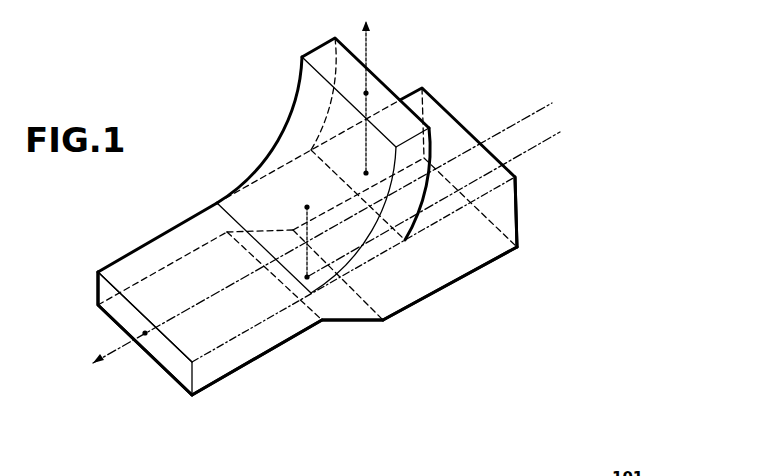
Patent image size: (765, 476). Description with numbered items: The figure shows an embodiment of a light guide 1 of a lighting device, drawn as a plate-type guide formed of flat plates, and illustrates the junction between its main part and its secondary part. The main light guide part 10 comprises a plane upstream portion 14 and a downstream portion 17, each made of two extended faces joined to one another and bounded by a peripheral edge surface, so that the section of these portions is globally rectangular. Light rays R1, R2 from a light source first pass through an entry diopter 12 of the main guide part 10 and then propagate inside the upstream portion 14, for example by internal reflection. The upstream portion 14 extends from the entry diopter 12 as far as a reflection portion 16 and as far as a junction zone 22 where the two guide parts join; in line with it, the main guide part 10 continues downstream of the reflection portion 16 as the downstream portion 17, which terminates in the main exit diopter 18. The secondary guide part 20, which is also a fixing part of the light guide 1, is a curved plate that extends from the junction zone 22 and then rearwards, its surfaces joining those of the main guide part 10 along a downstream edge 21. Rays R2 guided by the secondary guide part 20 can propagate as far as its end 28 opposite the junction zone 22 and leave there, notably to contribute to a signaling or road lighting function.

The light guide 1 is at (236, 128).
The main light guide part 10 is at (521, 250).
The entry diopter 12 is at (519, 206).
The upstream portion 14 is at (452, 258).
The reflection portion 16 is at (347, 322).
The downstream portion 17 is at (257, 342).
The main exit diopter 18 is at (173, 360).
The secondary guide part 20 is at (395, 83).
The downstream edge 21 is at (239, 223).
The junction zone 22 is at (377, 260).
The end of the secondary guide part 28 is at (331, 53).
The light ray R1 is at (528, 117).
The light ray R2 is at (368, 56).